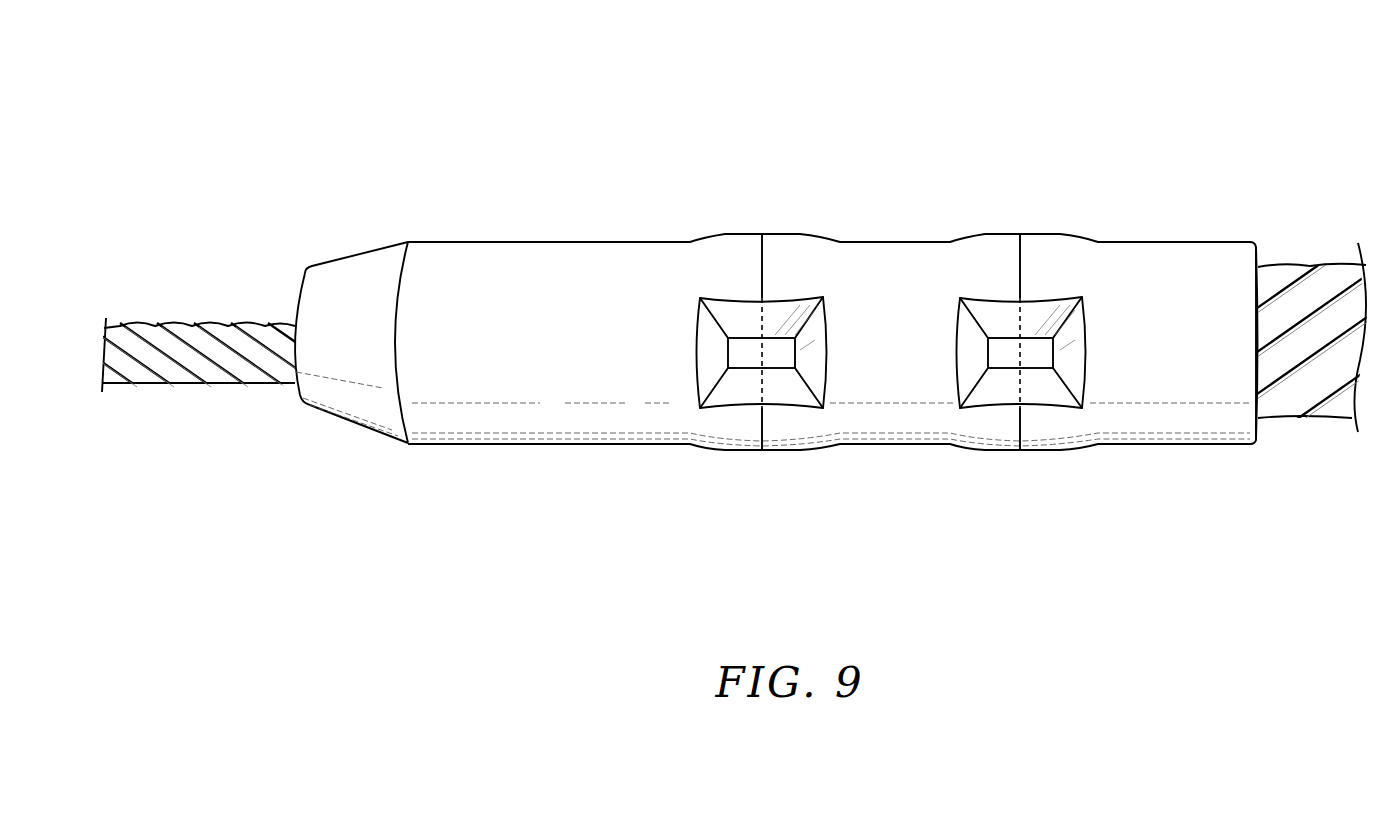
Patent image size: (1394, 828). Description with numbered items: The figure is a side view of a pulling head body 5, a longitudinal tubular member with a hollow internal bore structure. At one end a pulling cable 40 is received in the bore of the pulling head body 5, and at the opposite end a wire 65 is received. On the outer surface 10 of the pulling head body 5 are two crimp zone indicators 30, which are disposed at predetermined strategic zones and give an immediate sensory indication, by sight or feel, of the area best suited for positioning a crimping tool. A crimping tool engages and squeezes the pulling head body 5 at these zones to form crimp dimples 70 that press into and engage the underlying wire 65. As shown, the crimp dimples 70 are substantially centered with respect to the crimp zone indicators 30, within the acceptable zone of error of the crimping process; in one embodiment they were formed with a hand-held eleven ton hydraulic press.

The pulling head body 5 is at (957, 124).
The outer surface 10 is at (507, 240).
The crimp zone indicators 30 is at (757, 261).
The pulling cable 40 is at (219, 327).
The wire 65 is at (1282, 264).
The crimp dimples 70 is at (743, 355).